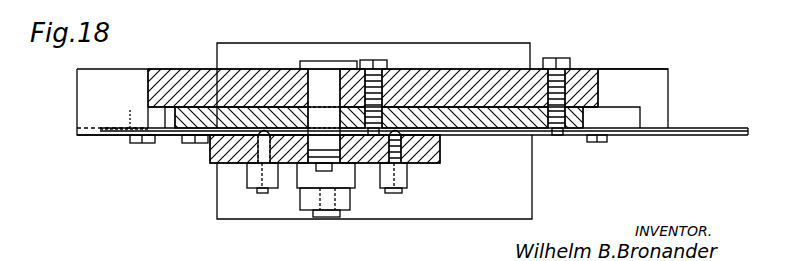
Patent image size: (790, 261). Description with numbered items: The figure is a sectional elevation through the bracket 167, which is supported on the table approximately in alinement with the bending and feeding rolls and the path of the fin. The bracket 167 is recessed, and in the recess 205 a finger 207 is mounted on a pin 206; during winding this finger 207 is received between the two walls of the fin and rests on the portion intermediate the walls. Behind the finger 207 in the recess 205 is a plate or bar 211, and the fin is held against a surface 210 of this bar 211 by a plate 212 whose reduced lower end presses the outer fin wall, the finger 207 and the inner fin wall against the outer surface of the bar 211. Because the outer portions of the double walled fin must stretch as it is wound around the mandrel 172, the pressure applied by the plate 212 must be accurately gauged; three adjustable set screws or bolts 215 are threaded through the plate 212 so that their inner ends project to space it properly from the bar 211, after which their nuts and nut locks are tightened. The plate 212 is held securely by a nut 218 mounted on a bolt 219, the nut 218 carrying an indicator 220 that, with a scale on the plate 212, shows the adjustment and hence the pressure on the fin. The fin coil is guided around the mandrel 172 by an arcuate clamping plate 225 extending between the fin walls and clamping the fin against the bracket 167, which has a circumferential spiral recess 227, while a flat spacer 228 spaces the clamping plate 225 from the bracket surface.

The bracket 167 is at (77, 96).
The flat spacer 228 is at (127, 116).
The circumferential spiral recess 227 is at (77, 128).
The clamping plate 225 is at (167, 137).
The adjustable set screws or bolts 215 is at (395, 192).
The nut 218 is at (302, 197).
The indicator 220 is at (318, 172).
The bolt 219 is at (303, 85).
The plate 212 is at (430, 165).
The mandrel 172 is at (525, 200).
The finger 207 is at (483, 130).
The surface 210 is at (461, 125).
The plate or bar 211 is at (500, 118).
The pin 206 is at (566, 59).
The recess 205 is at (628, 105).